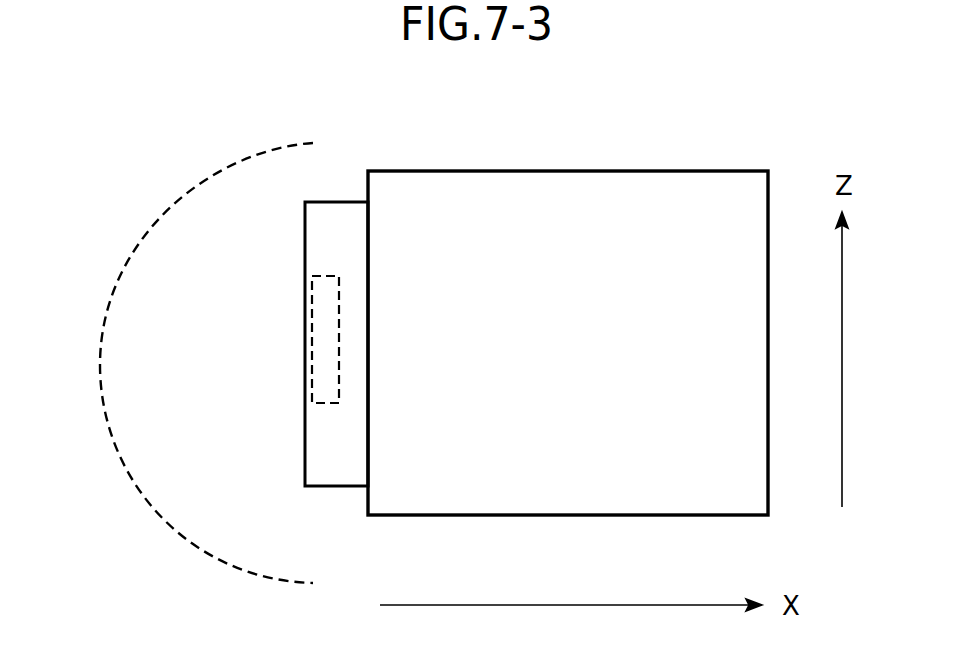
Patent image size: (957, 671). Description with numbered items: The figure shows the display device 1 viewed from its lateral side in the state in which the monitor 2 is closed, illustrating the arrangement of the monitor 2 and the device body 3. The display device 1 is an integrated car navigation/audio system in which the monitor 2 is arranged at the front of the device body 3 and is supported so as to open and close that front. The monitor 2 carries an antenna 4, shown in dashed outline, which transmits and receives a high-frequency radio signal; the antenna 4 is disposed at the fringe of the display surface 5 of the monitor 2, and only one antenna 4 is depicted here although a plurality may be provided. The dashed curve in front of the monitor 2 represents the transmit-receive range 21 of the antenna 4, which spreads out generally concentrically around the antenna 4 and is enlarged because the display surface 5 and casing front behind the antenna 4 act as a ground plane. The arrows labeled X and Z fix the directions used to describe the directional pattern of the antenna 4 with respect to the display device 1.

The display device 1 is at (513, 342).
The monitor 2 is at (345, 202).
The device body 3 is at (692, 171).
The antenna 4 is at (327, 380).
The display surface 5 is at (305, 331).
The transmit-receive range 21 is at (148, 440).